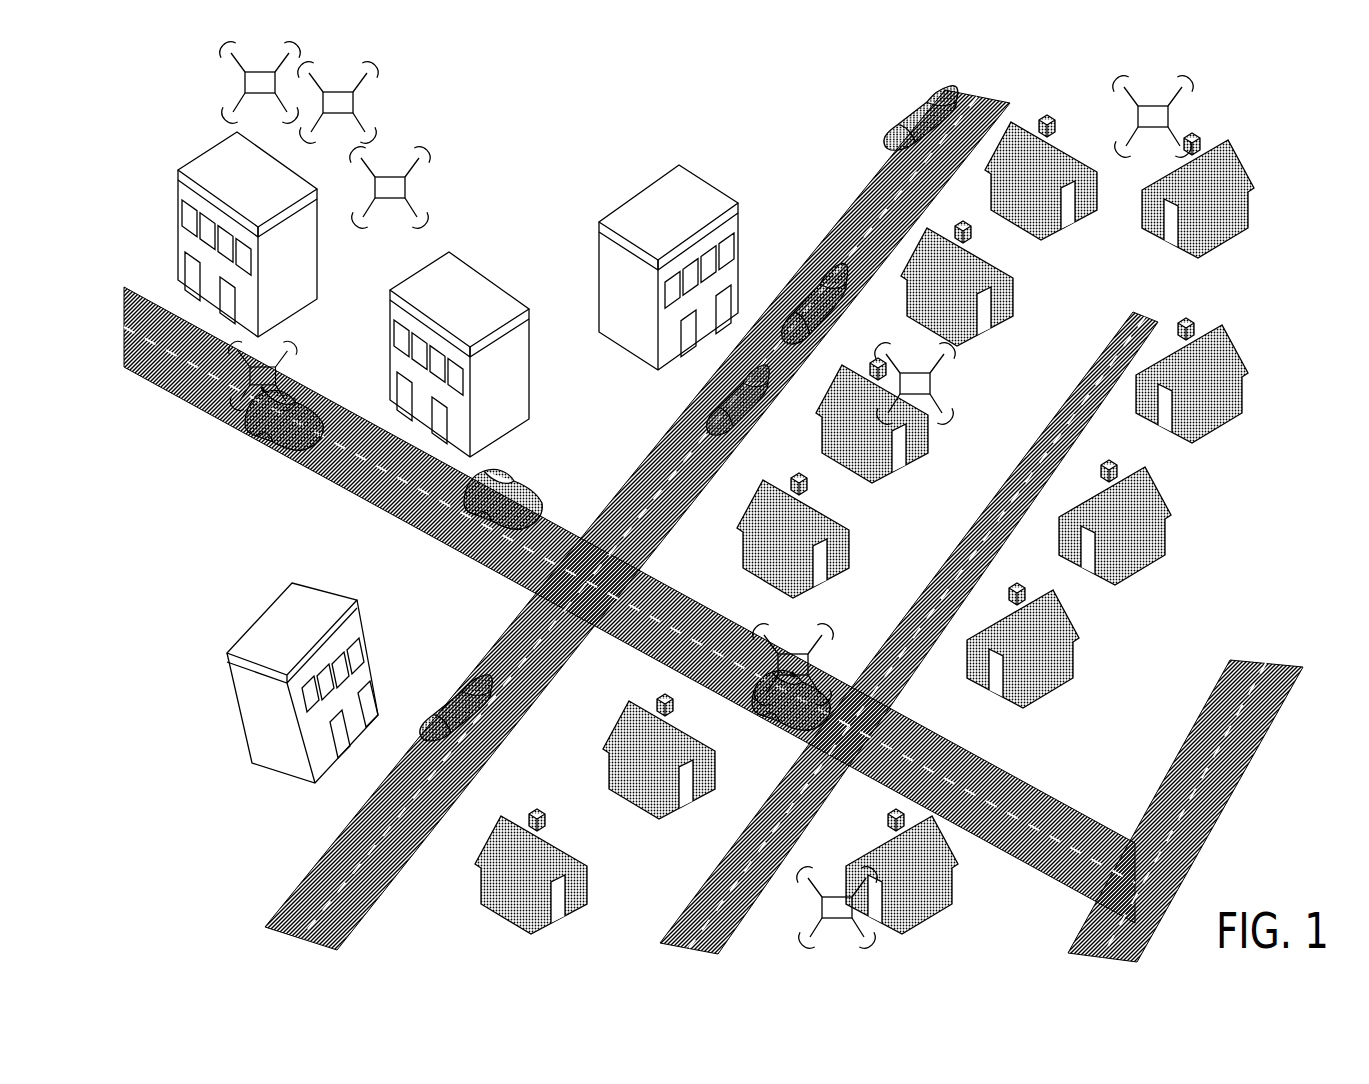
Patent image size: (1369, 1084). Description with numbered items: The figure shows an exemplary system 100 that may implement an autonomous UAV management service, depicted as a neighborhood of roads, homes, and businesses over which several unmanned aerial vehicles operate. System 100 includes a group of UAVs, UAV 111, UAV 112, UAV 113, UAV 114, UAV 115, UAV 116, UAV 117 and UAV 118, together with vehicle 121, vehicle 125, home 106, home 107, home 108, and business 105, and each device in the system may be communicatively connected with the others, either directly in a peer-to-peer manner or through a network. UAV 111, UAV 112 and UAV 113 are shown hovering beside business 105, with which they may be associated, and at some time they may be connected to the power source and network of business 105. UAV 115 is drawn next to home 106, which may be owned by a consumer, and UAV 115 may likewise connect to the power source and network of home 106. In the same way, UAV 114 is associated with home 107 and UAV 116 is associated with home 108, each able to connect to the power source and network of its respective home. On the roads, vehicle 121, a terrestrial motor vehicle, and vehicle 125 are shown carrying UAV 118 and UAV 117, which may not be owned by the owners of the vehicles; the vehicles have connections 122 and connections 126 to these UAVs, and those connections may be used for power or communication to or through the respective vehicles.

The system 100 is at (152, 60).
The business 105 is at (247, 234).
The home 106 is at (1240, 202).
The home 107 is at (872, 420).
The home 108 is at (936, 897).
The UAV 111 is at (260, 82).
The UAV 112 is at (338, 102).
The UAV 113 is at (390, 187).
The UAV 114 is at (915, 383).
The UAV 115 is at (1153, 116).
The UAV 116 is at (837, 907).
The UAV 117 is at (793, 664).
The UAV 118 is at (263, 375).
The vehicle 121 is at (817, 711).
The connections 122 is at (756, 706).
The vehicle 125 is at (313, 436).
The connections 126 is at (263, 390).